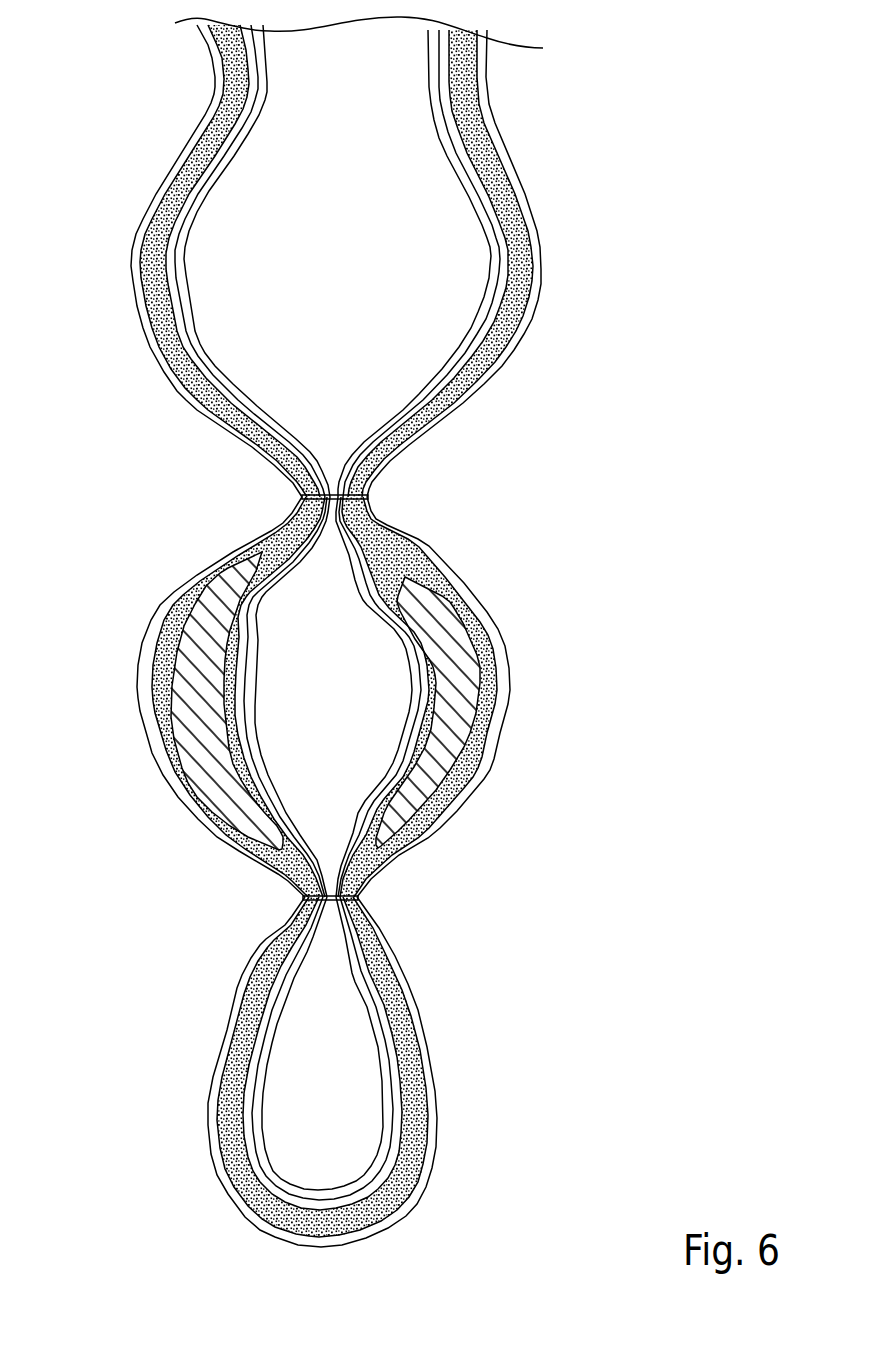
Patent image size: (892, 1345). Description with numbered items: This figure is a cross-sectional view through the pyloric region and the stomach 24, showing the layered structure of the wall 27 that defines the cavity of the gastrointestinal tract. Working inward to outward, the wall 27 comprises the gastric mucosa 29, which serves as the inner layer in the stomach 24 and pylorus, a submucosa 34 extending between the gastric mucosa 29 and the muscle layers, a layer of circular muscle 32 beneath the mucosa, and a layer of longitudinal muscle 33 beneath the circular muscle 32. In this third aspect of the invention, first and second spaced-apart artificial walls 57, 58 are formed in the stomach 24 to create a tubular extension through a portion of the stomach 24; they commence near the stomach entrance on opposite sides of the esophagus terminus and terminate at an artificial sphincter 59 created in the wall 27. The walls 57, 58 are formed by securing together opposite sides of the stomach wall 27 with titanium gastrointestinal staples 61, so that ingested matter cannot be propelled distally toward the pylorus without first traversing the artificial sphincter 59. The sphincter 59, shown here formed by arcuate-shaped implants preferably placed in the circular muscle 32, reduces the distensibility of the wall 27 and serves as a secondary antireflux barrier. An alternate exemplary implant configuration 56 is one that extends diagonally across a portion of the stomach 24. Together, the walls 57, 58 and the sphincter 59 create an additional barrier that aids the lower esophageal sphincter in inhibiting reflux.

The stomach 24 is at (436, 433).
The wall 27 is at (209, 323).
The gastric mucosa 29 is at (500, 320).
The circular muscle 32 is at (474, 385).
The longitudinal muscle 33 is at (526, 348).
The submucosa 34 is at (490, 272).
The alternate exemplary implant configuration 56 is at (206, 1092).
The first wall 57 is at (303, 900).
The second wall 58 is at (362, 501).
The artificial sphincter 59 is at (208, 582).
The titanium gastrointestinal staples 61 is at (366, 497).